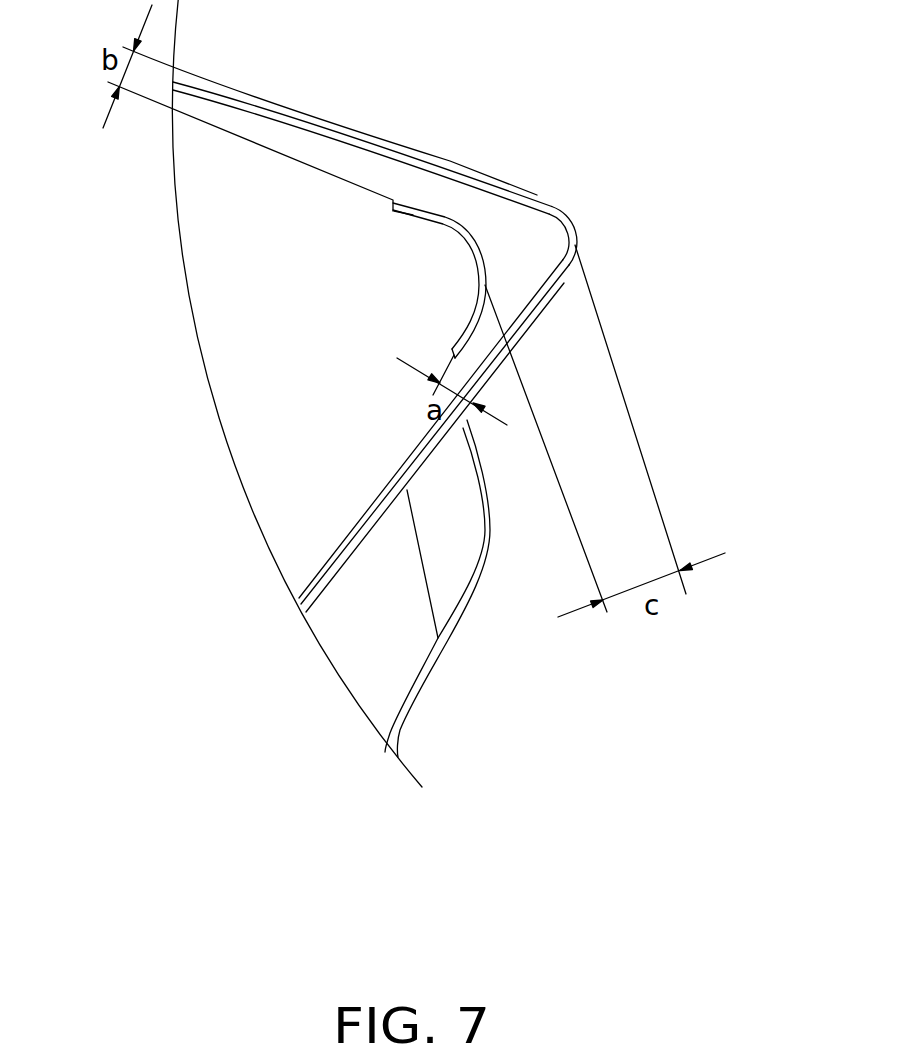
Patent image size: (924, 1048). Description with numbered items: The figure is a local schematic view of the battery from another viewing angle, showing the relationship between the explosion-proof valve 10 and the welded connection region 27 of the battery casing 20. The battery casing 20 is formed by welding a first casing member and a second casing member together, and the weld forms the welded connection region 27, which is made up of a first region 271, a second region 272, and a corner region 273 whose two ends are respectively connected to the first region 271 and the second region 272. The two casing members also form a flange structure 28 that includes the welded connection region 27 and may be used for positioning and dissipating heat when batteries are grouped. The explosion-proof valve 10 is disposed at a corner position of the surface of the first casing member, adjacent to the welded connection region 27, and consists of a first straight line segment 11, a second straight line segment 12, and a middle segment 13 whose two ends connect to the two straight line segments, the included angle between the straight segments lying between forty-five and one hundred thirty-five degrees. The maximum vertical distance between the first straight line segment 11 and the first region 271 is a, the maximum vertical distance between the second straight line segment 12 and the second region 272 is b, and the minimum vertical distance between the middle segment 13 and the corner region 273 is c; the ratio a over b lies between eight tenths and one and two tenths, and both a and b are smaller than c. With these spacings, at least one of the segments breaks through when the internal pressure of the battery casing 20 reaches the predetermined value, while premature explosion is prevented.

The explosion-proof valve 10 is at (255, 226).
The first straight line segment 11 is at (458, 345).
The second straight line segment 12 is at (413, 207).
The middle segment 13 is at (475, 257).
The battery casing 20 is at (200, 210).
The welded connection region 27 is at (778, 250).
The first region 271 is at (506, 364).
The second region 272 is at (400, 160).
The corner region 273 is at (565, 233).
The flange structure 28 is at (317, 585).